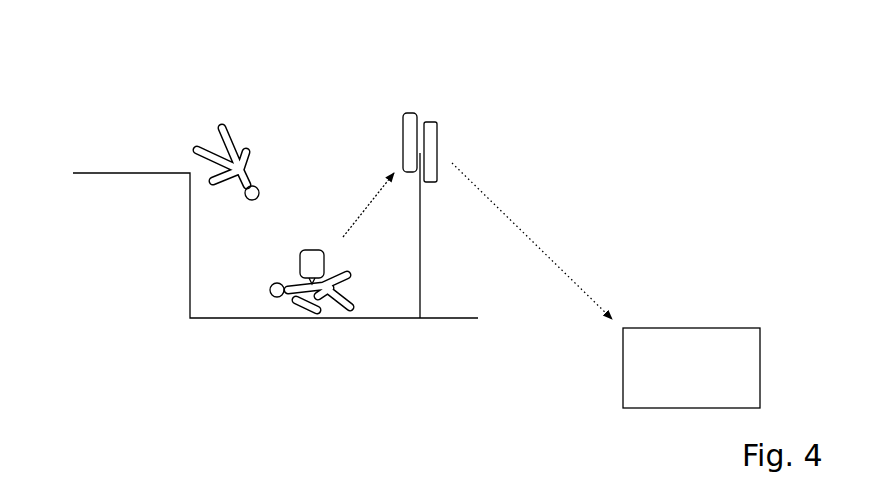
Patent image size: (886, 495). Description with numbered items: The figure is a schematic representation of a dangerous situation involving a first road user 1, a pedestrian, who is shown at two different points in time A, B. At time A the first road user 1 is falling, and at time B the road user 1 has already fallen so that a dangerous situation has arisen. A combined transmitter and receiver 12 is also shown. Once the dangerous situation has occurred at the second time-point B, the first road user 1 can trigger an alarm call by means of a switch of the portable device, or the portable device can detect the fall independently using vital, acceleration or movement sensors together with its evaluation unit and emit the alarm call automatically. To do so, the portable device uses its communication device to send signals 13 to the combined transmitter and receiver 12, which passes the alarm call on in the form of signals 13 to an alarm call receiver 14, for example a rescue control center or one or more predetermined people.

The first road user 1 is at (233, 150).
The first time-point A is at (208, 108).
The second time-point B is at (319, 330).
The combined transmitter and receiver 12 is at (403, 137).
The signals 13 is at (362, 205).
The alarm call receiver 14 is at (665, 328).